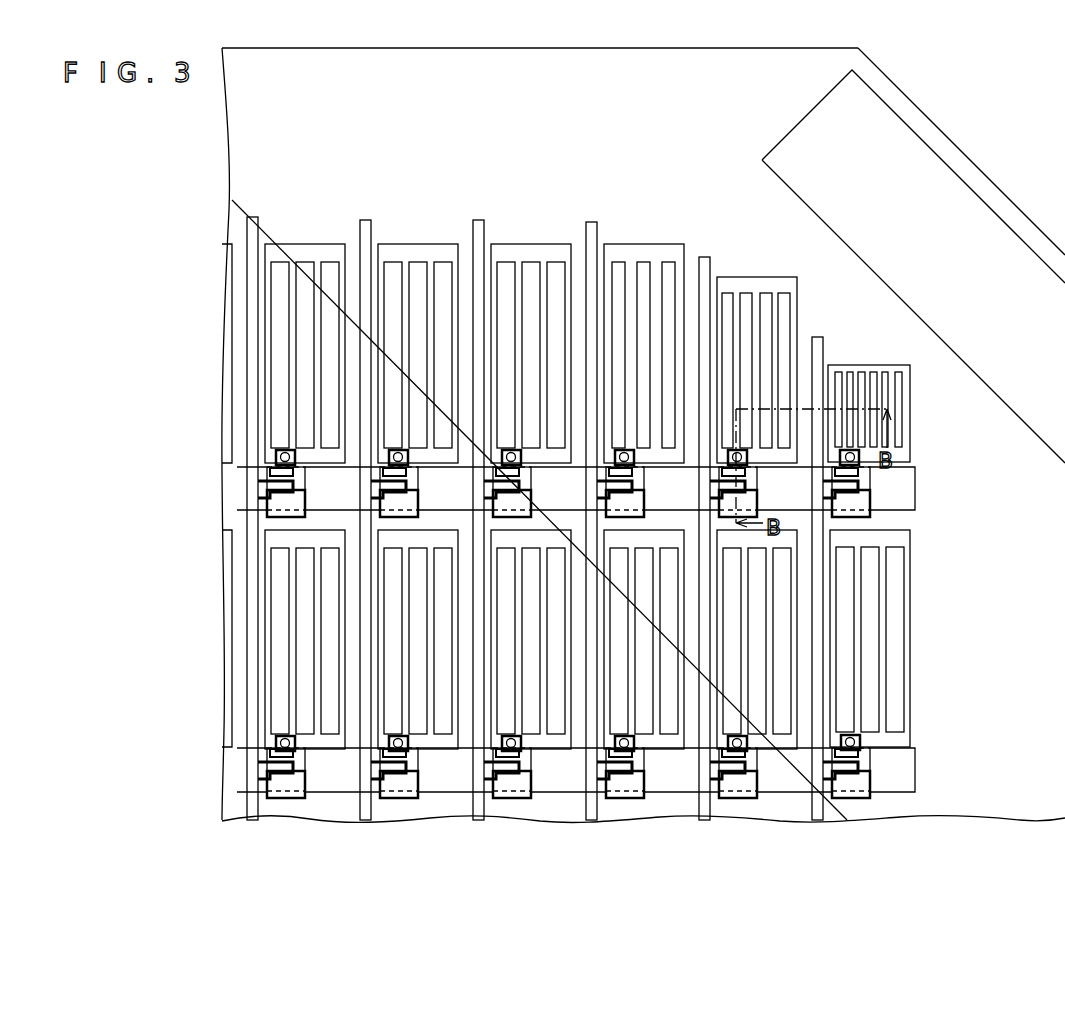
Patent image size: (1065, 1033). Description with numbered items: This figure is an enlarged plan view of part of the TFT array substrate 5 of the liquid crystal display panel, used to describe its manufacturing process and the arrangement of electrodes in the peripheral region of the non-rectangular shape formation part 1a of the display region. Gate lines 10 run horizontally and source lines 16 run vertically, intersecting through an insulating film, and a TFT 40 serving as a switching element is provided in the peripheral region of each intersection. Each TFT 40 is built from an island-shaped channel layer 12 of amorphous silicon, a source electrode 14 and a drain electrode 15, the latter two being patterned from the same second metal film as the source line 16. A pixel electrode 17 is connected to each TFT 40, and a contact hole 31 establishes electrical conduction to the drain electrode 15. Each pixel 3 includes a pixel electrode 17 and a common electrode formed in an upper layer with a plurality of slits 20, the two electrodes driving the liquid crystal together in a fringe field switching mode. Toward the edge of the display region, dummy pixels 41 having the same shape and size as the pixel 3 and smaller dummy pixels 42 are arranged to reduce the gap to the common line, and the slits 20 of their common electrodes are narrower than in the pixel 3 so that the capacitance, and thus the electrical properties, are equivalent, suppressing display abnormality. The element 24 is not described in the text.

The non-rectangular shape formation part 1a is at (265, 243).
The pixel 3 is at (538, 244).
The TFT array substrate 5 is at (837, 62).
The gate line 10 is at (891, 796).
The channel layer 12 is at (853, 765).
The source electrode 14 is at (850, 772).
The drain electrode 15 is at (853, 755).
The source line 16 is at (255, 815).
The pixel electrode 17 is at (897, 640).
The slit 20 is at (898, 600).
The seal 24 is at (987, 205).
The contact hole 31 is at (907, 488).
The TFT 40 is at (511, 812).
The dummy pixel 41 is at (640, 244).
The dummy pixel 42 is at (750, 277).